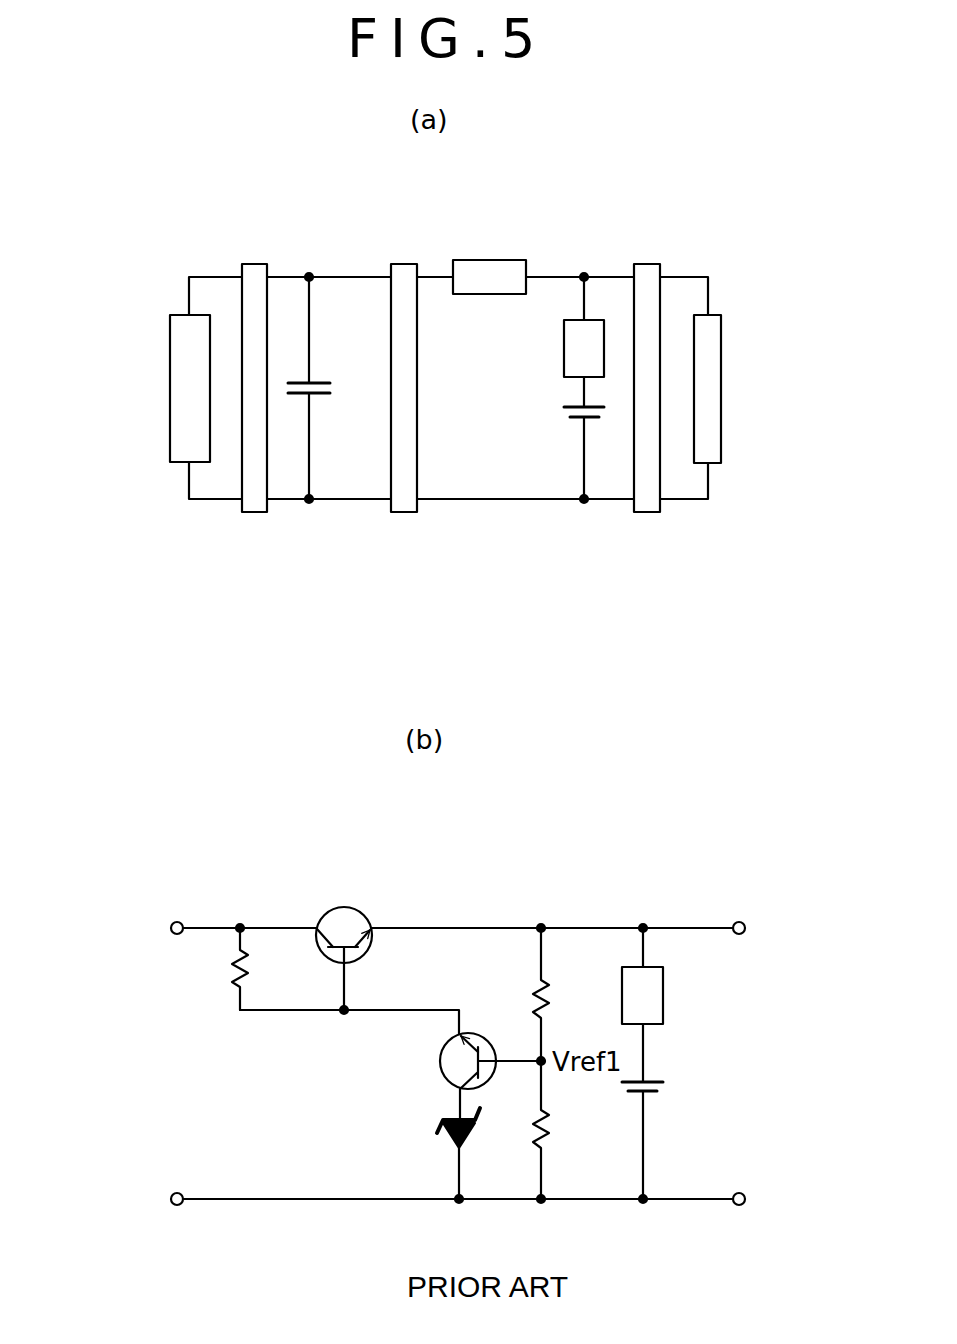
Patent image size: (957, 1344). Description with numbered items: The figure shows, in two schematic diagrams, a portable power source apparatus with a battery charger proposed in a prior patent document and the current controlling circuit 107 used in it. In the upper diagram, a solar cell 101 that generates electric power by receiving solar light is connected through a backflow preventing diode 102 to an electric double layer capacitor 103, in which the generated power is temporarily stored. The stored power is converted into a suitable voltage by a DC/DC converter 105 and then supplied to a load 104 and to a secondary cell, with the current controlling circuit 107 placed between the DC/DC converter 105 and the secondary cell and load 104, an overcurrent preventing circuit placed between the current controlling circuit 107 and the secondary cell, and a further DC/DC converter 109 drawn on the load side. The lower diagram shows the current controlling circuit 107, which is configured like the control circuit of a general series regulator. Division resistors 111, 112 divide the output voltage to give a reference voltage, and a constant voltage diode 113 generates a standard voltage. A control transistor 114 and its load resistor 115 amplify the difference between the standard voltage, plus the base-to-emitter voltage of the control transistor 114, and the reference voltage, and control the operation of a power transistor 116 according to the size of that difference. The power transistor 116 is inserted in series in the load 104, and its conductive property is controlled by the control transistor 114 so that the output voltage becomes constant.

The solar cell 101 is at (177, 368).
The backflow preventing diode 102 is at (253, 270).
The electric double layer capacitor 103 is at (326, 370).
The load 104 is at (718, 368).
The DC/DC converter 105 is at (403, 270).
The current controlling circuit 107 is at (494, 268).
The DC/DC converter 109 is at (647, 270).
The division resistor 111 is at (530, 1002).
The division resistor 112 is at (556, 1125).
The constant voltage diode 113 is at (431, 1138).
The control transistor 114 is at (433, 1065).
The load resistor 115 is at (231, 973).
The power transistor 116 is at (347, 899).